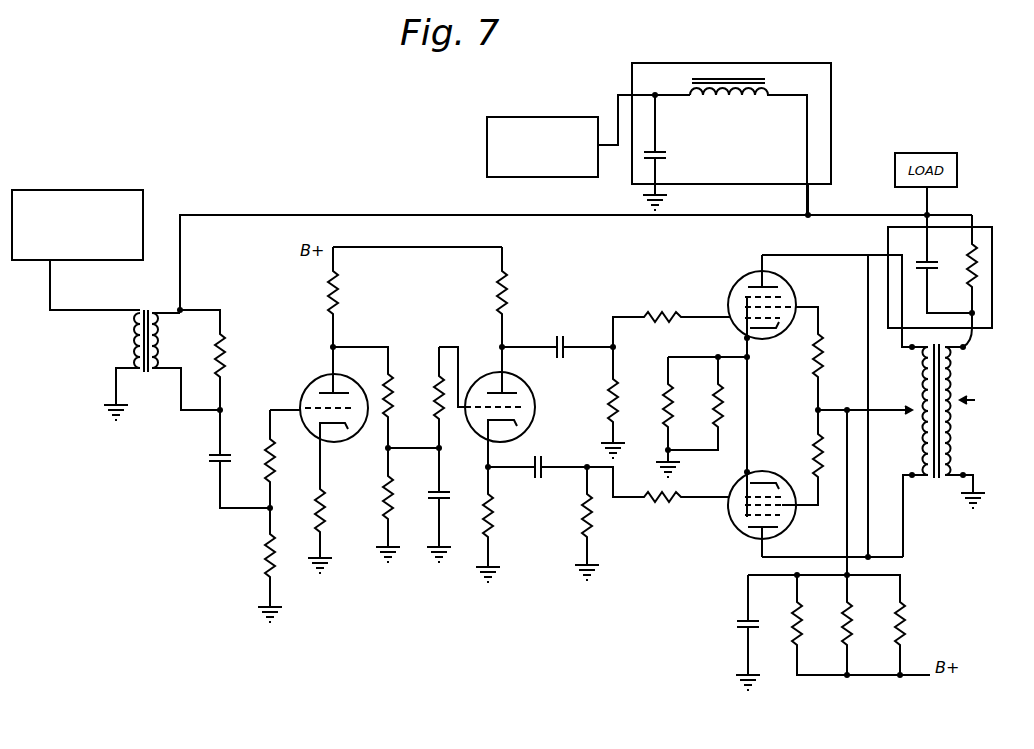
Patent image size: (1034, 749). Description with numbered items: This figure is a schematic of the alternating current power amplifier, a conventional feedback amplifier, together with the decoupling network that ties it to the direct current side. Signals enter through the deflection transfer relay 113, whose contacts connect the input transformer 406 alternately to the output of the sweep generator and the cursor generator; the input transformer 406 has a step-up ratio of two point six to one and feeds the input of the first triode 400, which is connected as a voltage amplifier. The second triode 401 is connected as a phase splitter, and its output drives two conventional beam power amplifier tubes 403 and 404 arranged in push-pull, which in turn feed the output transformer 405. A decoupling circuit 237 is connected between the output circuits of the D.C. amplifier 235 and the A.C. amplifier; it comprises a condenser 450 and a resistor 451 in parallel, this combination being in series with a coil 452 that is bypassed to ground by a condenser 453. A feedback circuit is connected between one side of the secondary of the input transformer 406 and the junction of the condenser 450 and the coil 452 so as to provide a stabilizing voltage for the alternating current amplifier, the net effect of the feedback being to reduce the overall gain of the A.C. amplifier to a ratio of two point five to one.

The deflection transfer relay 113 is at (143, 193).
The D.C. amplifier 235 is at (506, 117).
The decoupling circuit 237 is at (990, 226).
The triode 400 is at (346, 372).
The second triode 401 is at (534, 393).
The beam power amplifier tube 403 is at (736, 285).
The beam power amplifier tube 404 is at (735, 528).
The output transformer 405 is at (935, 345).
The input transformer 406 is at (162, 374).
The condenser 450 is at (947, 255).
The resistor 451 is at (979, 277).
The coil 452 is at (774, 92).
The condenser 453 is at (670, 155).